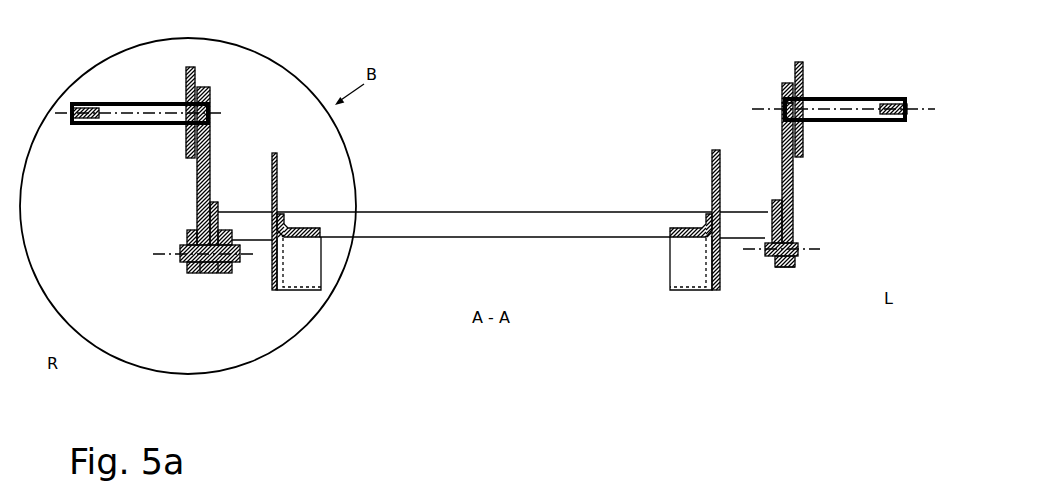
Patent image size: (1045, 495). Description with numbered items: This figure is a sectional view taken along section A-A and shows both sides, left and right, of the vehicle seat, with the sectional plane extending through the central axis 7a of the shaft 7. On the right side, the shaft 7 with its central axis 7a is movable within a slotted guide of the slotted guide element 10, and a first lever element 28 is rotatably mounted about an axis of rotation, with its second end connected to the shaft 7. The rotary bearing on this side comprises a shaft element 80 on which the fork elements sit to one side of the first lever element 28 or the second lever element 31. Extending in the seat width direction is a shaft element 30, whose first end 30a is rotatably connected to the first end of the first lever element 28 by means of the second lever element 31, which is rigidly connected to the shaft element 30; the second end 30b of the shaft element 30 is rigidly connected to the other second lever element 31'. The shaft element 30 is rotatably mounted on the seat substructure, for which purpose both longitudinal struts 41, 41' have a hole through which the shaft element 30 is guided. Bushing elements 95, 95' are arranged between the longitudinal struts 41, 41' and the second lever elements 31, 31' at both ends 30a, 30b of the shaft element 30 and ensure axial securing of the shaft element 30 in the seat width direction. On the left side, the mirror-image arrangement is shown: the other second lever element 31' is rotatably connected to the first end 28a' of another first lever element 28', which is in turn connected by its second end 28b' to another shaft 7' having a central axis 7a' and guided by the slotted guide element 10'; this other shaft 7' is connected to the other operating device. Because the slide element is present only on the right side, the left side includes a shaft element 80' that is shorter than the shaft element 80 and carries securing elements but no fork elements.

The shaft 7 is at (140, 93).
The central axis 7a is at (87, 132).
The slotted guide element 10 is at (166, 120).
The first lever element 28 is at (178, 166).
The bushing element 95 is at (222, 193).
The first end of the shaft element 30a is at (251, 215).
The longitudinal strut 41 is at (302, 221).
The shaft element 30 is at (463, 221).
The shaft element 80 is at (205, 276).
The second lever element 31 is at (209, 278).
The shaft 7' is at (845, 84).
The central axis 7a' is at (903, 135).
The second end of the other first lever element 28b' is at (766, 66).
The first lever element 28' is at (816, 169).
The slotted guide element 10' is at (826, 116).
The bushing element 95' is at (754, 243).
The longitudinal strut 41' is at (689, 220).
The second end of the shaft element 30b is at (735, 207).
The shaft element 80' is at (794, 267).
The second lever element 31' is at (780, 286).
The first end of the other first lever element 28a' is at (807, 297).